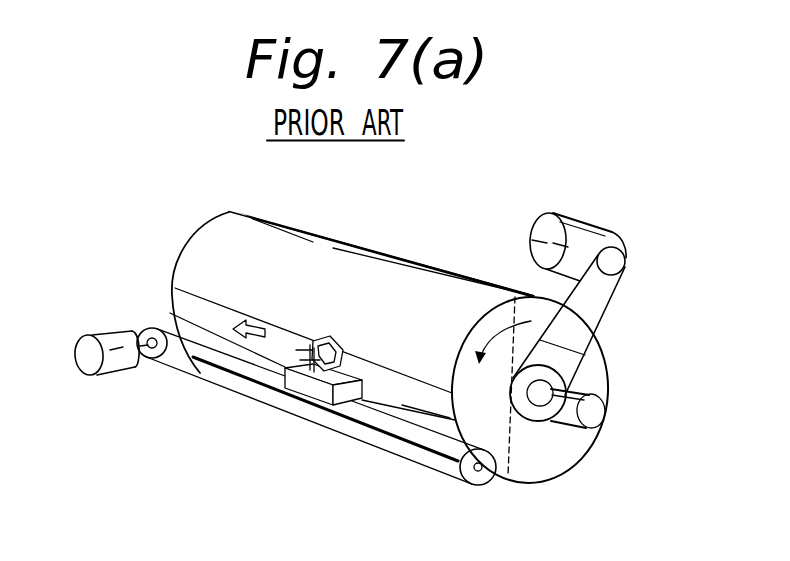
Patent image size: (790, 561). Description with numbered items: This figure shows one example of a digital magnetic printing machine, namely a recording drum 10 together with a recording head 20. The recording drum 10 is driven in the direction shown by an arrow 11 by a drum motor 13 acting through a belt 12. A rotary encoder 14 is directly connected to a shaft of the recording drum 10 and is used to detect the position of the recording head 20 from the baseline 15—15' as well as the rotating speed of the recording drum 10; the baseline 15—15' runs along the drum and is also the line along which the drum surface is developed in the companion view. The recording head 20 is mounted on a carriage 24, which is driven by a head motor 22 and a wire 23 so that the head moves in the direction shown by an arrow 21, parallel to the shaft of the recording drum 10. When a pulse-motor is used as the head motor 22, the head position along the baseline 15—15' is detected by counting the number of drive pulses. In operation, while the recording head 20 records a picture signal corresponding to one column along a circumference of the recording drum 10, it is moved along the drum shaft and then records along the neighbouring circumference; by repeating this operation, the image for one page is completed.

The recording drum 10 is at (610, 299).
The arrow 11 is at (494, 336).
The belt 12 is at (585, 325).
The drum motor 13 is at (578, 222).
The rotary encoder 14 is at (606, 415).
The baseline 15 is at (494, 367).
The baseline 15' is at (153, 314).
The recording head 20 is at (341, 346).
The arrow 21 is at (261, 322).
The head motor 22 is at (127, 372).
The wire 23 is at (195, 382).
The carriage 24 is at (308, 406).